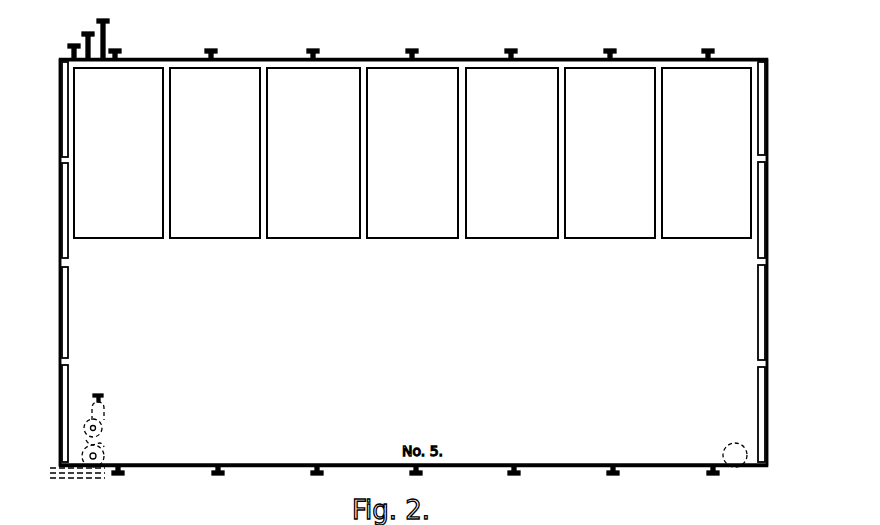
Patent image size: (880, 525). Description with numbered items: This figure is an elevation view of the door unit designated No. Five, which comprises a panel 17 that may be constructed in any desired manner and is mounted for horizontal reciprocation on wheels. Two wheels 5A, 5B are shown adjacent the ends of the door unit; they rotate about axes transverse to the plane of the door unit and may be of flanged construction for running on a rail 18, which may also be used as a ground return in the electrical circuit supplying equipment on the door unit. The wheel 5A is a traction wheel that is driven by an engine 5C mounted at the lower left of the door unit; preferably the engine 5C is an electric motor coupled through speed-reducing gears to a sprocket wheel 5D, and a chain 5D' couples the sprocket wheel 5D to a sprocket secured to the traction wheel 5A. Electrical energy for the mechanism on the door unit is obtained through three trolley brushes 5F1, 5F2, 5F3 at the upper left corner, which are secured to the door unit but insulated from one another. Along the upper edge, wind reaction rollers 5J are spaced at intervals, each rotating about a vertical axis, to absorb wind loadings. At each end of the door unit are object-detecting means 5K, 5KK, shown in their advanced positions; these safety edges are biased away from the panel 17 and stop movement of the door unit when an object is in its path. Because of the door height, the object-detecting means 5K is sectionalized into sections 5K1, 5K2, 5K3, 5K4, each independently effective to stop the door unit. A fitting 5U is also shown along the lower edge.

The trolley brush 5F1 is at (74, 45).
The trolley brush 5F2 is at (88, 33).
The trolley brush 5F3 is at (103, 20).
The wind reaction rollers 5J is at (405, 49).
The object-detecting means 5K is at (48, 272).
The section of object-detecting means 5K1 is at (61, 119).
The section of object-detecting means 5K2 is at (61, 212).
The section of object-detecting means 5K3 is at (61, 319).
The section of object-detecting means 5K4 is at (61, 415).
The object-detecting means 5KK is at (804, 271).
The engine 5C is at (105, 410).
The sprocket wheel 5D is at (109, 429).
The chain 5D' is at (112, 451).
The wheel 5A is at (96, 468).
The rail 18 is at (72, 478).
The bottom bolt 5U is at (322, 476).
The panel 17 is at (560, 452).
The wheel 5B is at (737, 468).